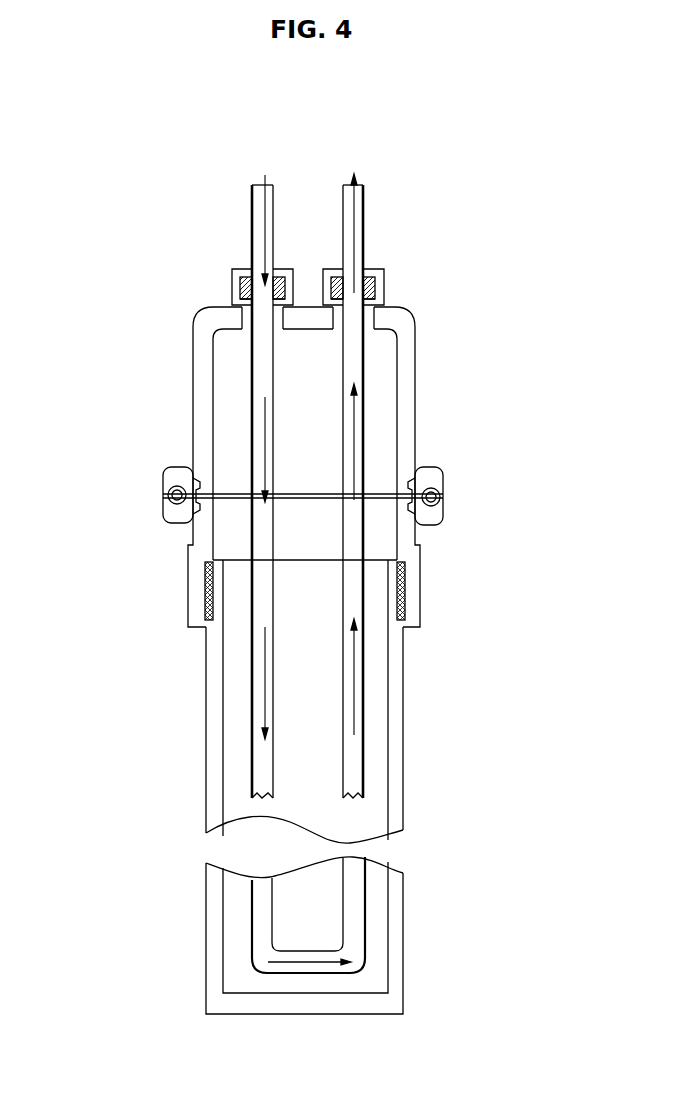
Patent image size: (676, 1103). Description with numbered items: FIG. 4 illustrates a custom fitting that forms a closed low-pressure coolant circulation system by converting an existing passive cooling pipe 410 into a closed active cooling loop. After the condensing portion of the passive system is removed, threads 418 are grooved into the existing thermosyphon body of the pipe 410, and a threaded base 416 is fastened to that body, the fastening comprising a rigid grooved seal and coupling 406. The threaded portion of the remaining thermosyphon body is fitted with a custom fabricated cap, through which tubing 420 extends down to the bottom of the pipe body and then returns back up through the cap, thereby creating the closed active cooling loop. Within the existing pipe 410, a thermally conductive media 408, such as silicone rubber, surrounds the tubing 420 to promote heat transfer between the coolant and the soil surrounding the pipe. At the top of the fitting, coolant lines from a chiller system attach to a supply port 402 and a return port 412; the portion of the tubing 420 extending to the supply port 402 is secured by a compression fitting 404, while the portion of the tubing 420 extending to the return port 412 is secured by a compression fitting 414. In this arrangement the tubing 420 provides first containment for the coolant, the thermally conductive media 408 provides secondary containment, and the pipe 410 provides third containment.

The supply port 402 is at (252, 225).
The compression fitting 404 is at (232, 297).
The rigid grooved seal and coupling 406 is at (163, 474).
The thermally conductive media 408 is at (297, 627).
The existing passive cooling pipe 410 is at (205, 790).
The return port 412 is at (366, 230).
The compression fitting 414 is at (388, 290).
The threaded base 416 is at (420, 555).
The threads 418 is at (407, 633).
The tubing 420 is at (368, 922).